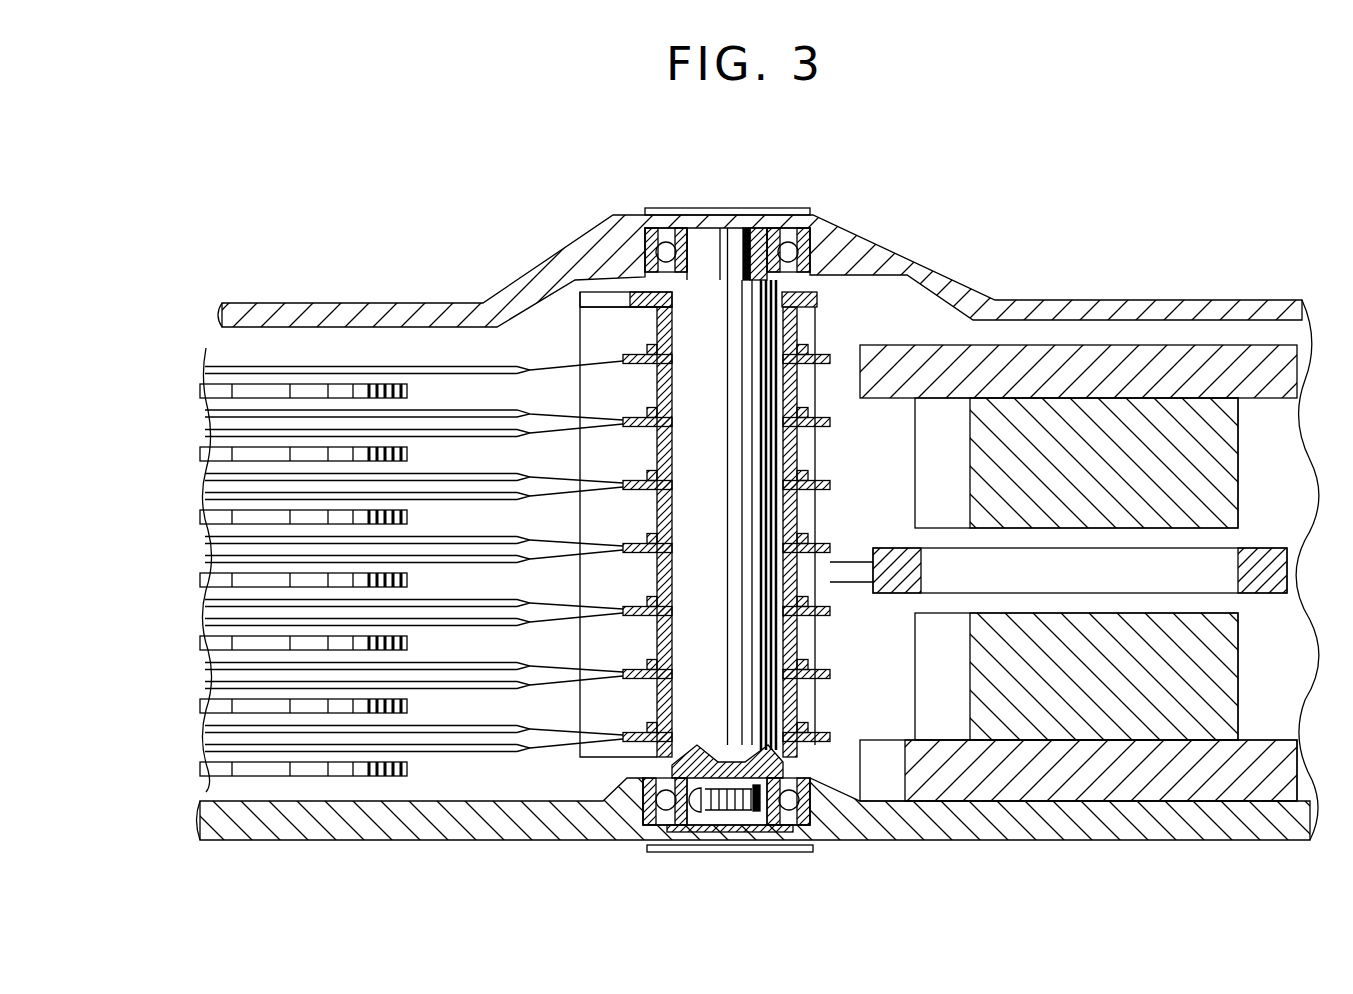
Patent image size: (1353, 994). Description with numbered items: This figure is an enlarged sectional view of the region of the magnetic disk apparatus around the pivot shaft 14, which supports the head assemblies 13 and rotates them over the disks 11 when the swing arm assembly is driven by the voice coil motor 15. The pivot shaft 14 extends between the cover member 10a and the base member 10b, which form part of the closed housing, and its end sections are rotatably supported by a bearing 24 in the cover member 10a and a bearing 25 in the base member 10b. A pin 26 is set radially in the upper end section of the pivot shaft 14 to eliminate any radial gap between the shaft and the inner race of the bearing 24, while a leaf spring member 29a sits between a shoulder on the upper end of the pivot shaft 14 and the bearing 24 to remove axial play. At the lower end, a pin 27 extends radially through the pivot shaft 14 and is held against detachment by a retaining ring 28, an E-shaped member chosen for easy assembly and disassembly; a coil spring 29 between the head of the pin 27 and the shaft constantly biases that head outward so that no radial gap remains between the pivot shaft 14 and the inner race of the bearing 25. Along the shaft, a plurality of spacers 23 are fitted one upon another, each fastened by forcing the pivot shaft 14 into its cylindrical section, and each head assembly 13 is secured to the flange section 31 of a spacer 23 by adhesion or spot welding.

The cover member 10a is at (1228, 300).
The base member 10b is at (1172, 840).
The disks 11 is at (215, 453).
The head assemblies 13 is at (453, 410).
The pivot shaft 14 is at (712, 228).
The voice coil motor 15 is at (1097, 345).
The spacers 23 is at (822, 360).
The bearing 24 is at (845, 236).
The bearing 25 is at (638, 808).
The pin 26 is at (753, 260).
The pin 27 is at (744, 848).
The retaining ring 28 is at (787, 850).
The coil spring 29 is at (703, 838).
The leaf spring member 29a is at (648, 248).
The flange section 31 is at (640, 556).